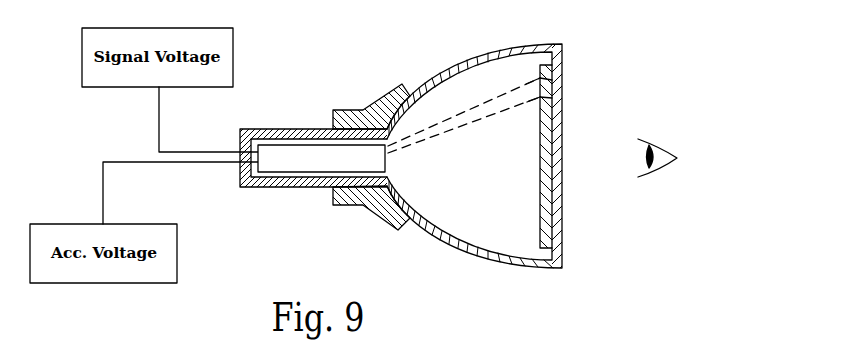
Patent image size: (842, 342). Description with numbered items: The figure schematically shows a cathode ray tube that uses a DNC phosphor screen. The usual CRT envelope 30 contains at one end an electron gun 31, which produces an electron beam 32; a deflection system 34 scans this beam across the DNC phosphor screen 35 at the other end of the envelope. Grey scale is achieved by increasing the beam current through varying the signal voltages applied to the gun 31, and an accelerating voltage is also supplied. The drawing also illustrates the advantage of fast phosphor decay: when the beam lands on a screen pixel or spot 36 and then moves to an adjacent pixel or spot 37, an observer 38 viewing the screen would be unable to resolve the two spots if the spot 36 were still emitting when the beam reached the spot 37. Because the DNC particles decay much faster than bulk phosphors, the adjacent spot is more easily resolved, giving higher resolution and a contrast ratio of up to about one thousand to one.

The CRT envelope 30 is at (467, 64).
The electron gun 31 is at (293, 160).
The electron beam 32 is at (503, 93).
The deflection system 34 is at (383, 103).
The DNC phosphor screen 35 is at (555, 227).
The screen pixel or spot 36 is at (558, 80).
The adjacent pixel or spot 37 is at (559, 97).
The observer 38 is at (662, 163).